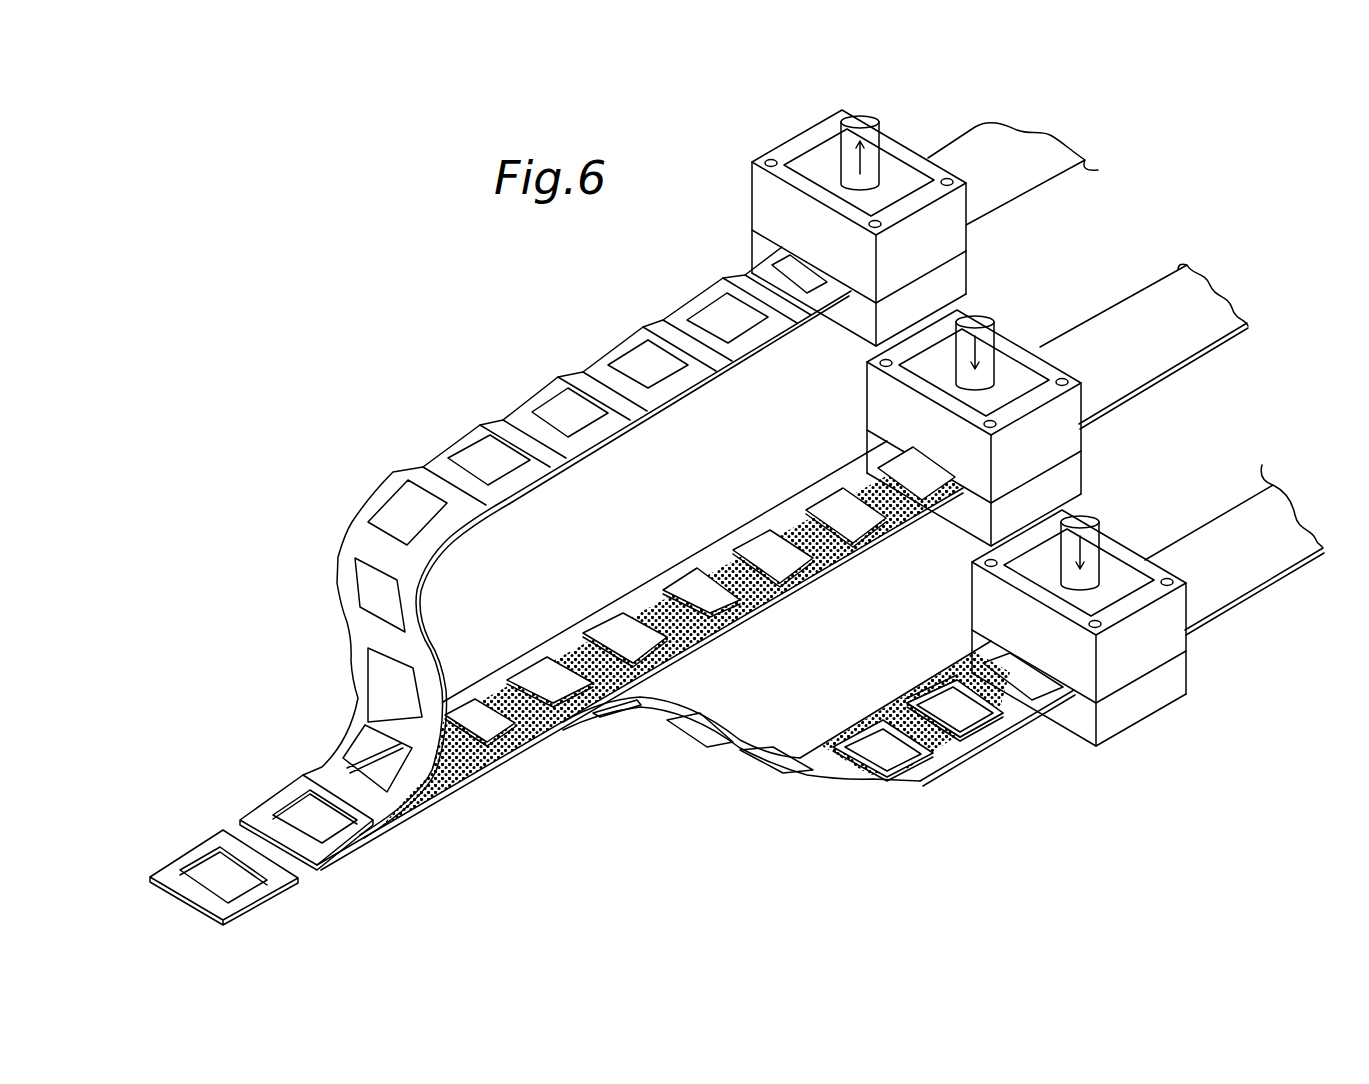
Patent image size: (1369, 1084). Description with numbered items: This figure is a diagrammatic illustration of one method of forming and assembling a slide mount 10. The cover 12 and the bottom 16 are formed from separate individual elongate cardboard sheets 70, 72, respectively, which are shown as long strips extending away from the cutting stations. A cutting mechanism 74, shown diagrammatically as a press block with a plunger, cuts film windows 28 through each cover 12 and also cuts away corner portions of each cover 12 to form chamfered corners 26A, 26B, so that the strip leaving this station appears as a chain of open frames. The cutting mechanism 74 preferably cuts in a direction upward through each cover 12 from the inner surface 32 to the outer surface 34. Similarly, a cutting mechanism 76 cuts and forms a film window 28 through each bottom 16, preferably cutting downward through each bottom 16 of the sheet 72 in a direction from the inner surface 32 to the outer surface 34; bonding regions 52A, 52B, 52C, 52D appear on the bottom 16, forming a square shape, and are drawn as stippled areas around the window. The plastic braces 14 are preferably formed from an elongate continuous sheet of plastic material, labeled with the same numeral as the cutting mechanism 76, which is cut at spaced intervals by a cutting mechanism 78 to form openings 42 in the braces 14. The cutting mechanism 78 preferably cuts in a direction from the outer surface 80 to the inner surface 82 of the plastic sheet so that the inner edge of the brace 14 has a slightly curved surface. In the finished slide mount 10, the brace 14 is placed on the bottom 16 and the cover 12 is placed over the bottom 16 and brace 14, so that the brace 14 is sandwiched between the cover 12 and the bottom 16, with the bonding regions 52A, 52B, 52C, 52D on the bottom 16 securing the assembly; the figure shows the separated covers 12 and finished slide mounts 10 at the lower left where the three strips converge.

The slide mount 10 is at (257, 793).
The cover 12 is at (626, 322).
The brace 14 is at (667, 577).
The bottom 16 is at (912, 780).
The chamfered corner 26A is at (488, 420).
The chamfered corner 26B is at (580, 368).
The film window 28 is at (497, 460).
The inner surface 32 is at (740, 366).
The outer surface 34 is at (715, 279).
The opening 42 is at (812, 494).
The bonding region 52A is at (987, 695).
The bonding region 52B is at (922, 680).
The bonding region 52C is at (963, 747).
The bonding region 52D is at (983, 737).
The elongate cardboard sheet 70 is at (1088, 166).
The elongate cardboard sheet 72 is at (1268, 478).
The cutting mechanism 74 is at (770, 150).
The cutting mechanism 76 is at (1180, 268).
The cutting mechanism 78 is at (1045, 343).
The outer surface 80 is at (832, 490).
The inner surface 82 is at (878, 564).